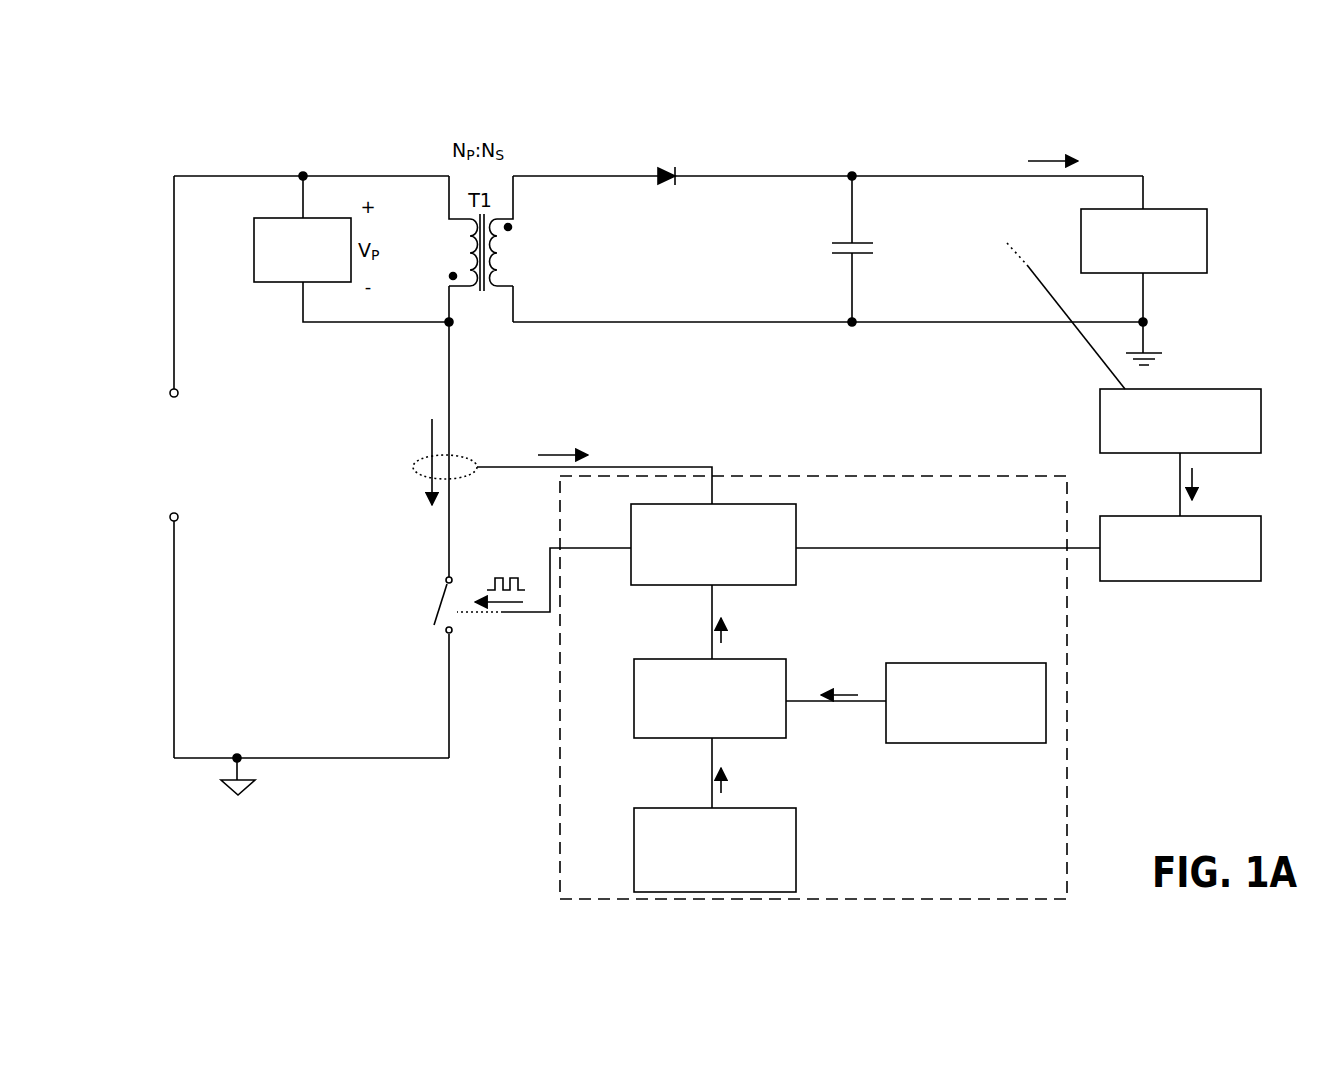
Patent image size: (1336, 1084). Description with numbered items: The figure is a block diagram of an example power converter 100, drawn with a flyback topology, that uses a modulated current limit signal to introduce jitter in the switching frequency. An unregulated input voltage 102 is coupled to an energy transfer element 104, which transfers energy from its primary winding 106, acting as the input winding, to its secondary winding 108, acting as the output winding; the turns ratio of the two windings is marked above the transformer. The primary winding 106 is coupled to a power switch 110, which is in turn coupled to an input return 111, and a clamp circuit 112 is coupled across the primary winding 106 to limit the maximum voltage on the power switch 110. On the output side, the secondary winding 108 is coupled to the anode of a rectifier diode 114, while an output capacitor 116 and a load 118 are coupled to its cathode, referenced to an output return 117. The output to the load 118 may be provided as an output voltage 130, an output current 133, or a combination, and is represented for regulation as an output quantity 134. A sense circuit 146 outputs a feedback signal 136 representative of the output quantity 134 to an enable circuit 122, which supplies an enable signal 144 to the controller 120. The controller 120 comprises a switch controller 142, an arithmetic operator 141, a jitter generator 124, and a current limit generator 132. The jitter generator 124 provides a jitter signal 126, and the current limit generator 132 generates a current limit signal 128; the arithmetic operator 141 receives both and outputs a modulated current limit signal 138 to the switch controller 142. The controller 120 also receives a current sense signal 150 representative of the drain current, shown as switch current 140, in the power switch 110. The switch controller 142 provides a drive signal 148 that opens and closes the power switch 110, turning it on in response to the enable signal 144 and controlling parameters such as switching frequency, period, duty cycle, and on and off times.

The power converter 100 is at (1231, 104).
The input voltage VIN 102 is at (163, 440).
The energy transfer element T1 104 is at (475, 274).
The primary winding 106 is at (447, 250).
The secondary winding 108 is at (506, 267).
The power switch S1 110 is at (388, 600).
The input return 111 is at (238, 800).
The clamp circuit 112 is at (250, 250).
The rectifier D1 114 is at (640, 167).
The output capacitor C1 116 is at (838, 228).
The output return 117 is at (1165, 360).
The load 118 is at (1212, 235).
The controller 120 is at (840, 472).
The enable circuit 122 is at (1178, 585).
The jitter generator 124 is at (970, 655).
The jitter signal UJTR 126 is at (835, 665).
The current limit signal UILIM 128 is at (800, 782).
The output voltage VO 130 is at (923, 225).
The current limit generator 132 is at (652, 805).
The output current IO 133 is at (1033, 120).
The output quantity UO 134 is at (985, 240).
The feedback signal UFB 136 is at (1245, 488).
The modulated current limit signal UJLIM 138 is at (795, 630).
The switch current ID 140 is at (418, 435).
The arithmetic operator 141 is at (672, 655).
The switch controller 142 is at (628, 518).
The enable signal UEN 144 is at (935, 523).
The sense circuit 146 is at (1092, 418).
The drive signal 148 is at (480, 683).
The current sense signal 150 is at (585, 392).